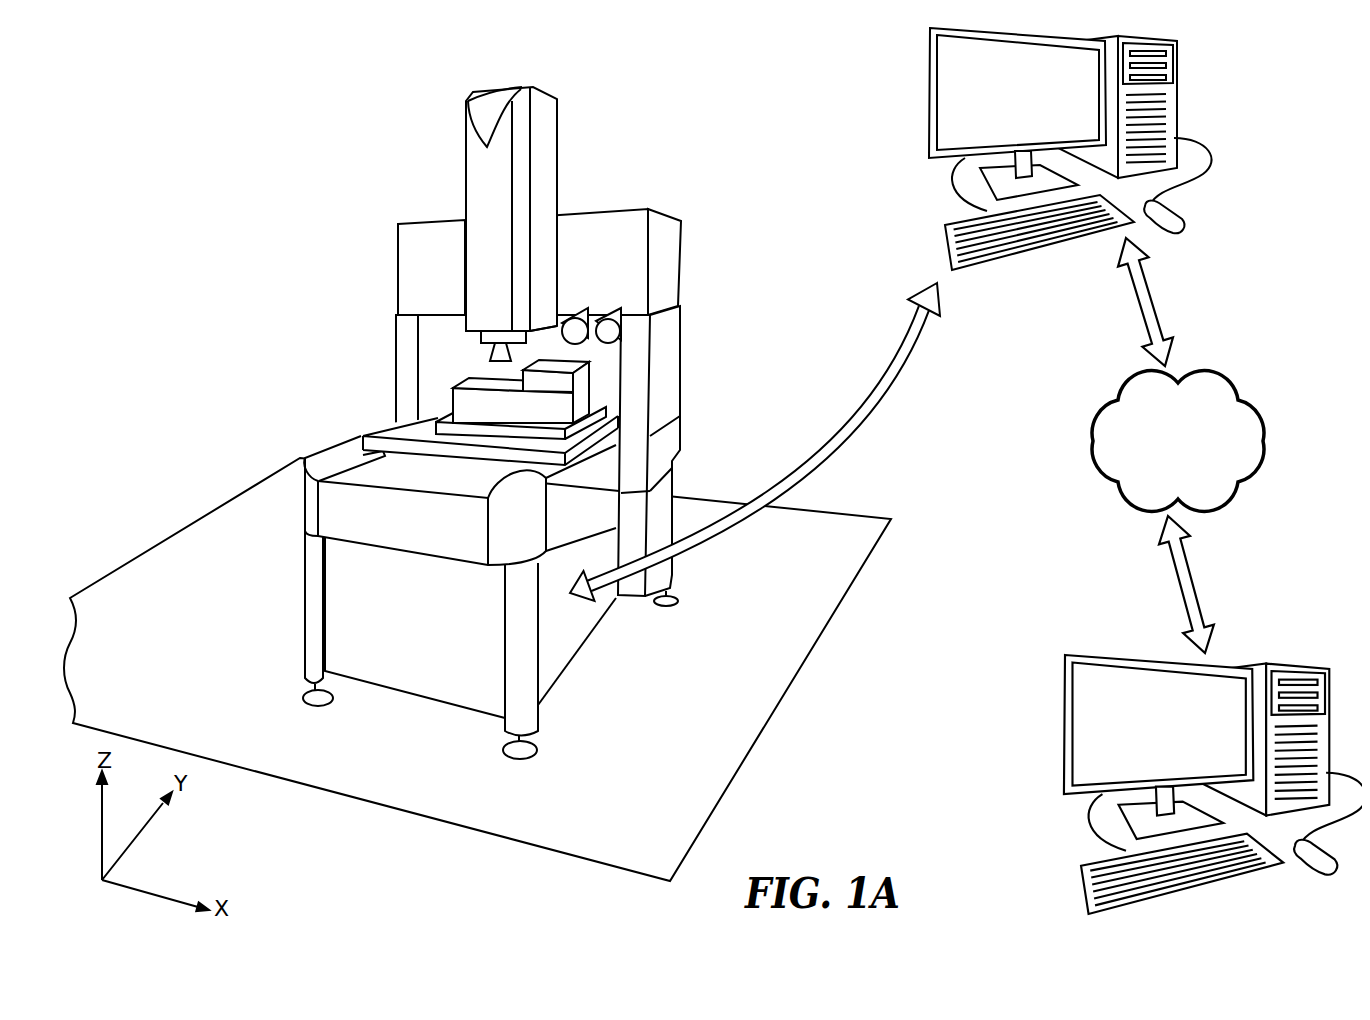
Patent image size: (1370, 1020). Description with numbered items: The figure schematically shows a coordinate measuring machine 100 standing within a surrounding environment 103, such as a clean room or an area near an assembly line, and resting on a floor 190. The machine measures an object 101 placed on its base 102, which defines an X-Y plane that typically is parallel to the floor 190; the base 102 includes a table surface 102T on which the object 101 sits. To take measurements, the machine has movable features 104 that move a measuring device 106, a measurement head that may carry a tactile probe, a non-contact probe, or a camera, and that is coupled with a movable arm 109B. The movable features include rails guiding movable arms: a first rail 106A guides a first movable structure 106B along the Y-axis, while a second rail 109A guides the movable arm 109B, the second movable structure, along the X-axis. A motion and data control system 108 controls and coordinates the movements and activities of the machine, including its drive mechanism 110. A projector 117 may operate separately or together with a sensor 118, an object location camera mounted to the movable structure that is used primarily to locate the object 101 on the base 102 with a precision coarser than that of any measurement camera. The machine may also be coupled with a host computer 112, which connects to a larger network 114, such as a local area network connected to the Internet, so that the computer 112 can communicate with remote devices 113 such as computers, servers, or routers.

The coordinate measuring machine 100 is at (426, 396).
The object 101 is at (475, 403).
The base 102 is at (391, 557).
The table surface 102T is at (462, 487).
The surrounding environment 103 is at (463, 287).
The movable features 104 is at (451, 197).
The measuring device 106 is at (408, 353).
The first rail 106A is at (617, 367).
The first movable structure 106B is at (657, 427).
The motion and data control system 108 is at (478, 358).
The second rail 109A is at (428, 262).
The movable arm 109B is at (548, 143).
The drive mechanism 110 is at (474, 229).
The computer 112 is at (1182, 85).
The remote devices 113 is at (1062, 818).
The network 114 is at (1155, 467).
The projector 117 is at (577, 302).
The sensor 118 is at (600, 328).
The floor 190 is at (167, 652).